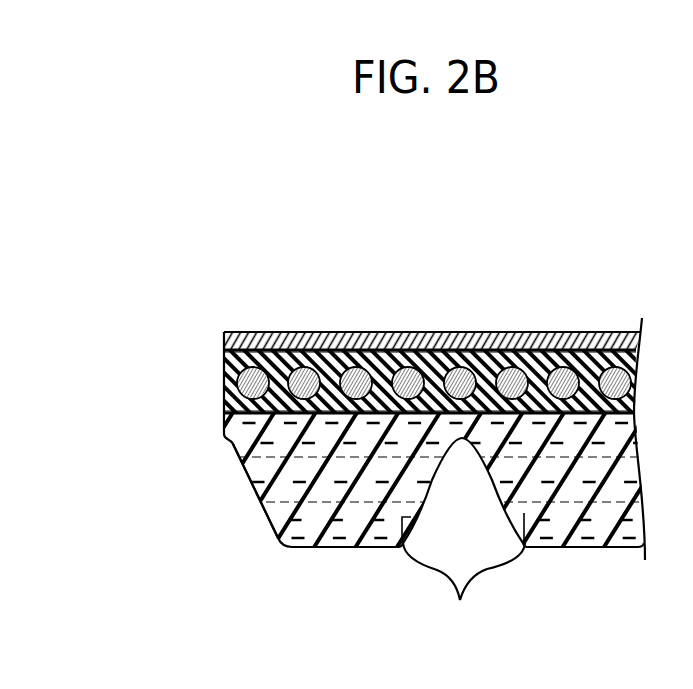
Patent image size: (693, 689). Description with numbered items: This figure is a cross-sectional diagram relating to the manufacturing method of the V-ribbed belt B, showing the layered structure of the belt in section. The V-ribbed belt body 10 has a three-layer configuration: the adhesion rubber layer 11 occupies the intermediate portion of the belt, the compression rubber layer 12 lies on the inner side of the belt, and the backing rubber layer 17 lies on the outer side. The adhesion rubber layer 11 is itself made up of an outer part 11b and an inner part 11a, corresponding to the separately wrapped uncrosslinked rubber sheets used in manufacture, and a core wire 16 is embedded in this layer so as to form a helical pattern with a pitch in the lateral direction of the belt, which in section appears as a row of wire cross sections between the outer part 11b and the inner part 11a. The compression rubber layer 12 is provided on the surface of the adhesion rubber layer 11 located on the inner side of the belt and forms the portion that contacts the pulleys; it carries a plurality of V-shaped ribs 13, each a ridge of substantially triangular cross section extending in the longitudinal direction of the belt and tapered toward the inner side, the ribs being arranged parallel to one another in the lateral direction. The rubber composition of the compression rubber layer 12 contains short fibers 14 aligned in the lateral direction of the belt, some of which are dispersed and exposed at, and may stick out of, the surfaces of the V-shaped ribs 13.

The V-ribbed belt B is at (550, 309).
The V-ribbed belt body 10 is at (240, 486).
The adhesion rubber layer 11 is at (131, 353).
The inner part of the adhesion rubber layer 11a is at (224, 401).
The outer part of the adhesion rubber layer 11b is at (224, 370).
The compression rubber layer 12 is at (274, 524).
The V-shaped ribs 13 is at (378, 549).
The short fibers 14 is at (464, 537).
The core wire 16 is at (403, 366).
The backing rubber layer 17 is at (225, 341).